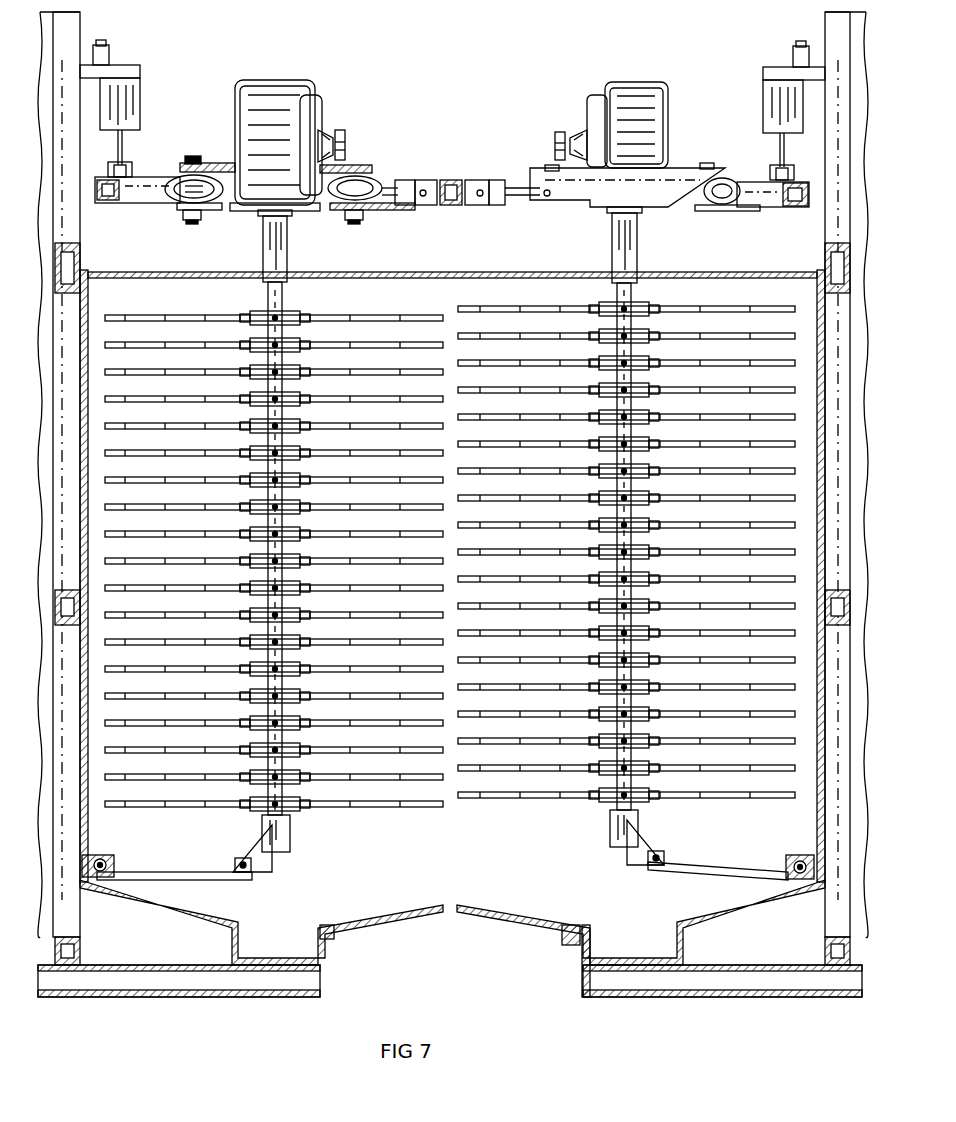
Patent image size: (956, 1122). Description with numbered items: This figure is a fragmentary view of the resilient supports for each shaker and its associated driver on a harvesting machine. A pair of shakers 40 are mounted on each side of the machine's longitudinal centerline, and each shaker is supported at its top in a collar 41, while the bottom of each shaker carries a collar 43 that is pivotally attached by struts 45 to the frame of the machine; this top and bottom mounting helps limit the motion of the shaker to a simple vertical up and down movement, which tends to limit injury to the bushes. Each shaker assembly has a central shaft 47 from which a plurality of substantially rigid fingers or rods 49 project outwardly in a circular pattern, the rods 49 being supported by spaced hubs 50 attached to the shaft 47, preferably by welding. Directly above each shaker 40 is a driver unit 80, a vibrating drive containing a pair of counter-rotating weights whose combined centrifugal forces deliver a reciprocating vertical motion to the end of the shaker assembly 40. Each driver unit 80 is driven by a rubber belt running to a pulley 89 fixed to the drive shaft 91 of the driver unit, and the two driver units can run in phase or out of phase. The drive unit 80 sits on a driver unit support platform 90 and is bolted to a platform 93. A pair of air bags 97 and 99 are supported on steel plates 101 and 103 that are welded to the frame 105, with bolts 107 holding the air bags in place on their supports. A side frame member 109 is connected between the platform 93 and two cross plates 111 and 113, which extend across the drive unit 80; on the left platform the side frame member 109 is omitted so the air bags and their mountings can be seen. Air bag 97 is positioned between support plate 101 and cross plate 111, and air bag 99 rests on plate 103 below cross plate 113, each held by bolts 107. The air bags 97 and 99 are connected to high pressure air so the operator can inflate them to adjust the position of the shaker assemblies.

The shaker 40 is at (353, 305).
The collar 41 is at (288, 259).
The collar 43 is at (291, 843).
The struts 45 is at (135, 870).
The shaft 47 is at (266, 300).
The fingers or rods 49 is at (138, 316).
The hubs 50 is at (292, 313).
The driver unit 80 is at (280, 82).
The pulley 89 is at (346, 145).
The driver unit support platform 90 is at (206, 90).
The drive shaft 91 is at (341, 130).
The platform 93 is at (240, 211).
The air bag 97 is at (176, 178).
The air bag 99 is at (372, 183).
The steel plate 101 is at (172, 204).
The steel plate 103 is at (381, 211).
The frame 105 is at (84, 20).
The bolts 107 is at (192, 156).
The side frame member 109 is at (676, 170).
The plate 111 is at (232, 165).
The plate 113 is at (366, 166).